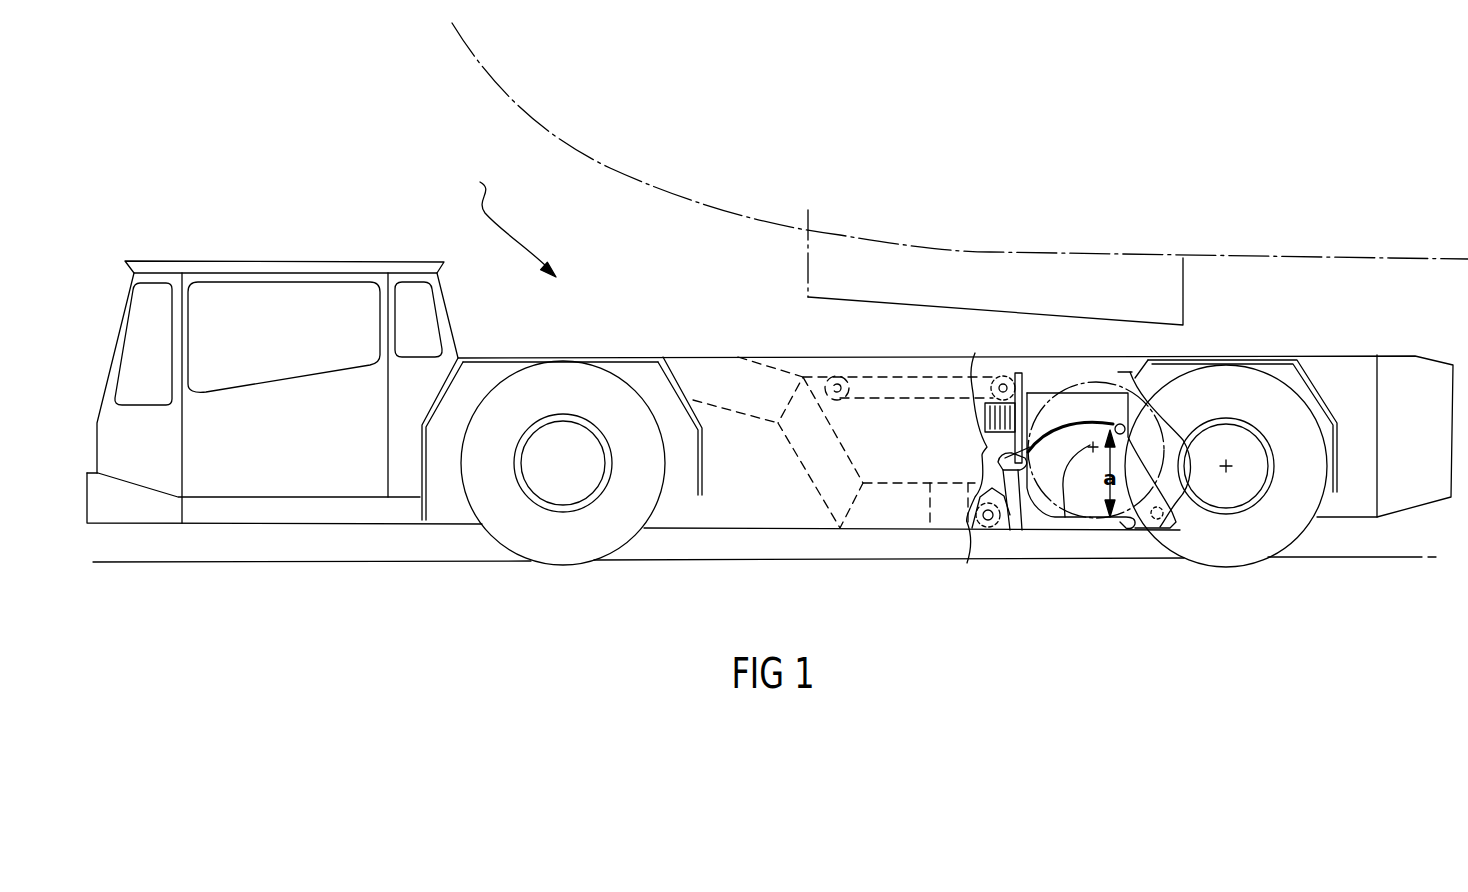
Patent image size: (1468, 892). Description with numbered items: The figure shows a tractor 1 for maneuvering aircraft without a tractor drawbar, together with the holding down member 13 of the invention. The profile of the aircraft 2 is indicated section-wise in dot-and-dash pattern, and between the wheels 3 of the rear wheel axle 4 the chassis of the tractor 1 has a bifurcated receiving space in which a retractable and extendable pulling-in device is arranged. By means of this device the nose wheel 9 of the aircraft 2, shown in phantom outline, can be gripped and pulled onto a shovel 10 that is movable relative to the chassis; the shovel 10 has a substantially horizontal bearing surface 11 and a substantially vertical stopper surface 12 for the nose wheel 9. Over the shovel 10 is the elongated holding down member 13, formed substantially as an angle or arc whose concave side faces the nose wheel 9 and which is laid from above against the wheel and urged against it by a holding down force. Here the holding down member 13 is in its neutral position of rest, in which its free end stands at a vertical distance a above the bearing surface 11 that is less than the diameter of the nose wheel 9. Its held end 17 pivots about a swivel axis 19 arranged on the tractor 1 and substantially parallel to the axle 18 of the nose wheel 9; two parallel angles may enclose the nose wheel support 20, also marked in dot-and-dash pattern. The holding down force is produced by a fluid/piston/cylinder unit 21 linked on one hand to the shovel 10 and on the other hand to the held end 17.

The tractor 1 is at (511, 222).
The aircraft 2 is at (458, 42).
The wheels 3 is at (1297, 417).
The rear wheel axle 4 is at (1232, 460).
The nose wheel 9 is at (1165, 410).
The shovel 10 is at (1092, 522).
The bearing surface 11 is at (1132, 526).
The stopper surface 12 is at (1022, 375).
The holding down member 13 is at (1080, 385).
The held end 17 is at (1030, 445).
The axle of the nose wheel 18 is at (1066, 520).
The swivel axis 19 is at (972, 500).
The nose wheel support 20 is at (1125, 372).
The fluid/piston/cylinder unit 21 is at (1022, 505).